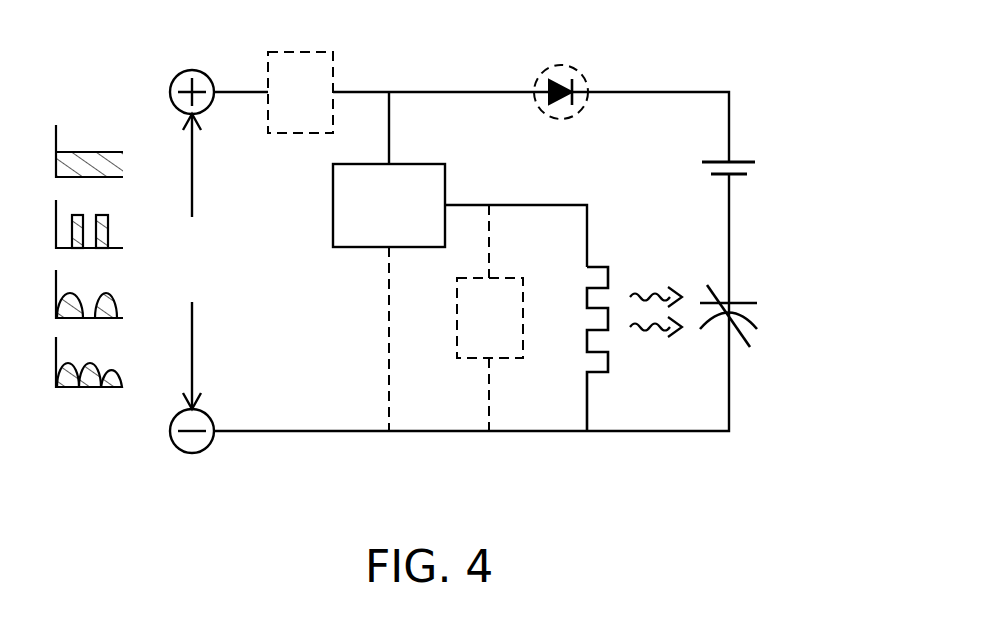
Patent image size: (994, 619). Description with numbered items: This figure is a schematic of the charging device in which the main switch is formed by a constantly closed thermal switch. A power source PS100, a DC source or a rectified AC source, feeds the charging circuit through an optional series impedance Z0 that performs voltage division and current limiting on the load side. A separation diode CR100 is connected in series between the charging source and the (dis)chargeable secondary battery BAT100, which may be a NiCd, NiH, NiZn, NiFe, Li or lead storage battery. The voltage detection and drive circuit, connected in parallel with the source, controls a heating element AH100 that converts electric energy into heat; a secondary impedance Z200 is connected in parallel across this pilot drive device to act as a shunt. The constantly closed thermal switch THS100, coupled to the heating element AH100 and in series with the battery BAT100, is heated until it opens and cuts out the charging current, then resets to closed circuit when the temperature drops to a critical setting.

The power source PS100 is at (192, 261).
The impedance Z0 is at (300, 92).
The secondary impedance Z200 is at (490, 318).
The separation diode CR100 is at (610, 58).
The (dis)chargeable secondary battery BAT100 is at (783, 174).
The constantly closed thermal switch THS100 is at (757, 325).
The heating element AH100 is at (610, 323).